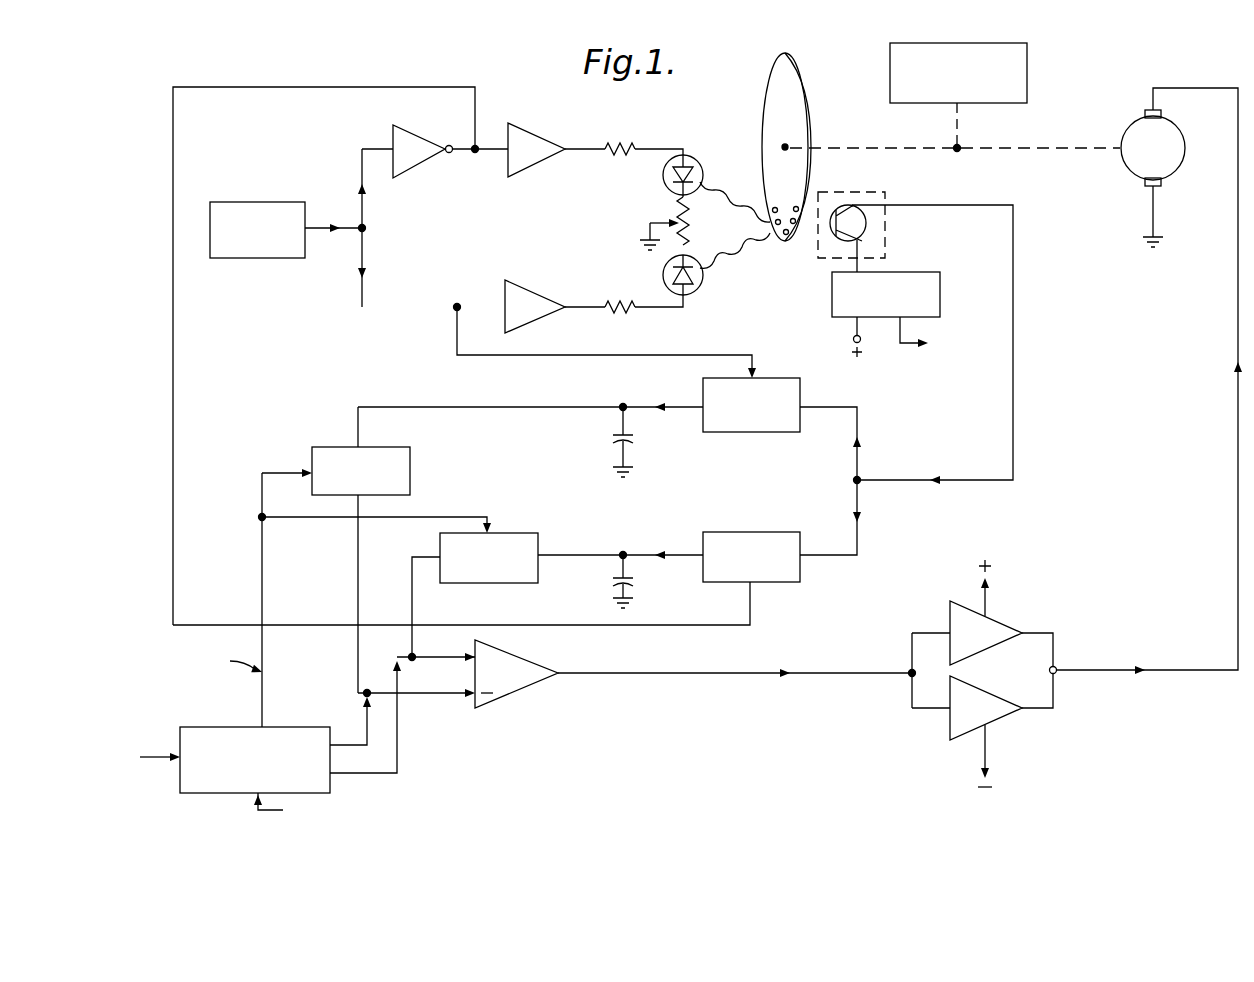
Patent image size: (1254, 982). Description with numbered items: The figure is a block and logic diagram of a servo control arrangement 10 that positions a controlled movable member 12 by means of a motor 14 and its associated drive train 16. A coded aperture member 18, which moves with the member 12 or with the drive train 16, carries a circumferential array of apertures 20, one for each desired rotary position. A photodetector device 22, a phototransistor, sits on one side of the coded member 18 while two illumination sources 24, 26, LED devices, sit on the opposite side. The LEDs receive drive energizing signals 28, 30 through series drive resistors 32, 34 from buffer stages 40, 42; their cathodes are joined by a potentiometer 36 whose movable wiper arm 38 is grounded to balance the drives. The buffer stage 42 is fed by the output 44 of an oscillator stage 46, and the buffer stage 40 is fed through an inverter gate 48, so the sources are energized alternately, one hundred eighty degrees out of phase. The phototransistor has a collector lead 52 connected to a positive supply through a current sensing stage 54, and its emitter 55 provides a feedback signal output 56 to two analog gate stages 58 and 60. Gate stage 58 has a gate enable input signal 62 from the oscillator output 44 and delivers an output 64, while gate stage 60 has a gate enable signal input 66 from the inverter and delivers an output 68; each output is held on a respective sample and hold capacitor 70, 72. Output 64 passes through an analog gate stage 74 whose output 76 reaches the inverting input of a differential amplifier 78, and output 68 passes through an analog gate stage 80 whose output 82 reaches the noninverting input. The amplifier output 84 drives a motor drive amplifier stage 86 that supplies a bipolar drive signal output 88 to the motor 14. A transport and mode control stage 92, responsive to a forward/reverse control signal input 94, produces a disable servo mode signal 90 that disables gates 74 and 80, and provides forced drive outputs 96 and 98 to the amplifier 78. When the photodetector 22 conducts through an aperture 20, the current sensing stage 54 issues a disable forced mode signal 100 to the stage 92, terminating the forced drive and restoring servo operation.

The servo control arrangement 10 is at (275, 406).
The controlled movable member 12 is at (1027, 62).
The motor 14 is at (1132, 123).
The drive train 16 is at (1028, 148).
The coded aperture member 18 is at (807, 69).
The apertures 20 is at (781, 246).
The photodetector device 22 is at (887, 190).
The illumination source 24 is at (663, 178).
The illumination source 26 is at (663, 275).
The drive energizing signal 28 is at (596, 149).
The drive energizing signal 30 is at (574, 308).
The series drive resistor 32 is at (625, 144).
The series drive resistor 34 is at (619, 313).
The potentiometer 36 is at (690, 220).
The movable wiper arm 38 is at (650, 223).
The buffer stage 40 is at (534, 132).
The buffer stage 42 is at (528, 280).
The oscillator output 44 is at (364, 228).
The oscillator stage 46 is at (250, 202).
The inverter gate 48 is at (411, 130).
The collector lead 52 is at (866, 229).
The current sensing stage 54 is at (940, 296).
The emitter 55 is at (847, 205).
The feedback signal output 56 is at (1013, 205).
The analog gate stage 58 is at (800, 379).
The analog gate stage 60 is at (750, 532).
The gate enable input signal 62 is at (755, 355).
The gate stage output 64 is at (637, 407).
The gate enable signal input 66 is at (752, 605).
The gate stage output 68 is at (645, 555).
The sample and hold capacitor 70 is at (613, 436).
The sample and hold capacitor 72 is at (613, 583).
The analog gate stage 74 is at (330, 447).
The gate stage output 76 is at (415, 693).
The differential amplifier 78 is at (512, 656).
The analog gate stage 80 is at (510, 533).
The gate stage output 82 is at (412, 601).
The differential amplifier output 84 is at (586, 673).
The motor drive amplifier stage 86 is at (925, 617).
The drive signal output 88 is at (1108, 668).
The disable servo mode input signal 90 is at (264, 691).
The transport and mode control stage 92 is at (213, 727).
The forward/reverse control signal input 94 is at (157, 752).
The positive output 96 is at (400, 755).
The reverse output 98 is at (360, 727).
The disable forced mode signal output 100 is at (910, 343).